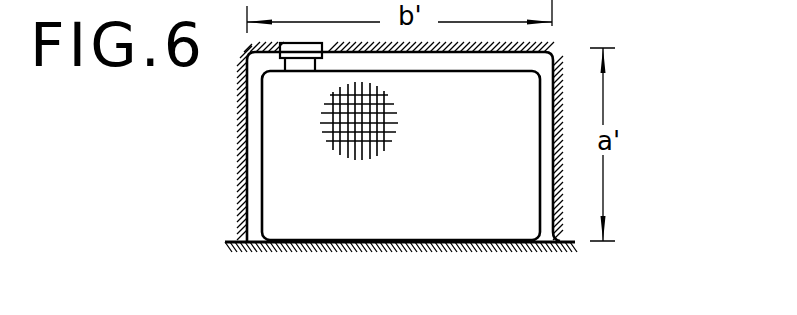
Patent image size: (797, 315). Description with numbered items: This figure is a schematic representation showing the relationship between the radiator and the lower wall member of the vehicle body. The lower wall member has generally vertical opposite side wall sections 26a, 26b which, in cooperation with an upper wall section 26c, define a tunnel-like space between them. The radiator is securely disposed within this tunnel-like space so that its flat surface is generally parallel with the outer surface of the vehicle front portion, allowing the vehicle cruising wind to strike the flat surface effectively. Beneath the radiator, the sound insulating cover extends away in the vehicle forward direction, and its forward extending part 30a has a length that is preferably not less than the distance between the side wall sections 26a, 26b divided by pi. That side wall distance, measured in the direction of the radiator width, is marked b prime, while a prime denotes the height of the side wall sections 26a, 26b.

The side wall section 26a is at (247, 171).
The side wall section 26b is at (554, 195).
The upper wall section 26c is at (531, 54).
The forward extending part 30a is at (255, 247).